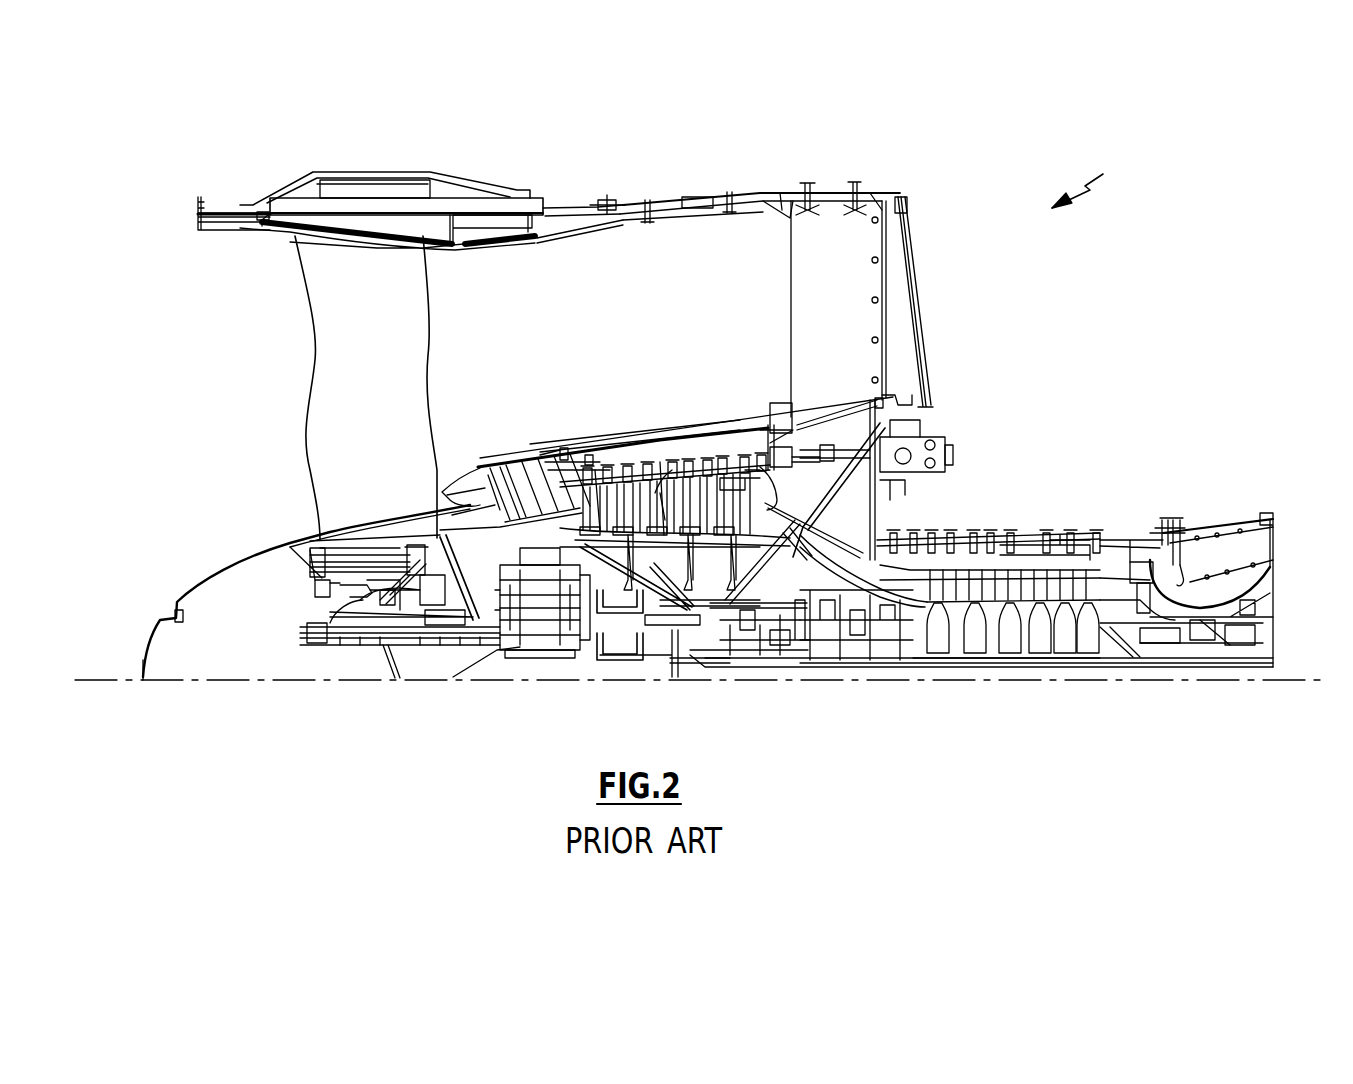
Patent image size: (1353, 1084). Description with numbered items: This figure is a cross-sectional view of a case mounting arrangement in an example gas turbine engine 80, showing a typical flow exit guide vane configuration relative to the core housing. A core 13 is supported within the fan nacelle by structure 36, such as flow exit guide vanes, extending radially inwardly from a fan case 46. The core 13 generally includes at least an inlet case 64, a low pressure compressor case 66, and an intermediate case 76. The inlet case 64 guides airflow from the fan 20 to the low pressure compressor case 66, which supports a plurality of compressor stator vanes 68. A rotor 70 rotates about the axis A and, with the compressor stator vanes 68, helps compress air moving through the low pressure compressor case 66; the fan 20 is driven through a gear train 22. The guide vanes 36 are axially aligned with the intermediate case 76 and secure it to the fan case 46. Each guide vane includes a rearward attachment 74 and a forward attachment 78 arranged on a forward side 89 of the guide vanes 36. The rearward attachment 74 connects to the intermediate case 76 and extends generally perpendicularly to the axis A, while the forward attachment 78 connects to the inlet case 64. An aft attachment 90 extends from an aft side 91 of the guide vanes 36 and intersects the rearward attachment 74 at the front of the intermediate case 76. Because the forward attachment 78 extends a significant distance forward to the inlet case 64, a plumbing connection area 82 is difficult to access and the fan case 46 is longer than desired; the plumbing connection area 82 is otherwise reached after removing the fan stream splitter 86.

The core 13 is at (641, 445).
The fan 20 is at (325, 387).
The gear train 22 is at (527, 662).
The flow exit guide vanes 36 is at (845, 302).
The fan case 46 is at (762, 185).
The inlet case 64 is at (502, 467).
The low pressure compressor case 66 is at (660, 492).
The compressor stator vanes 68 is at (517, 494).
The rotor 70 is at (690, 552).
The rearward attachment 74 is at (777, 443).
The intermediate case 76 is at (843, 528).
The forward attachment 78 is at (497, 463).
The gas turbine engine 80 is at (1092, 181).
The plumbing connection area 82 is at (555, 440).
The fan stream splitter 86 is at (723, 427).
The forward side 89 is at (790, 320).
The aft attachment 90 is at (877, 495).
The aft side 91 is at (883, 243).
The axis A is at (1293, 680).